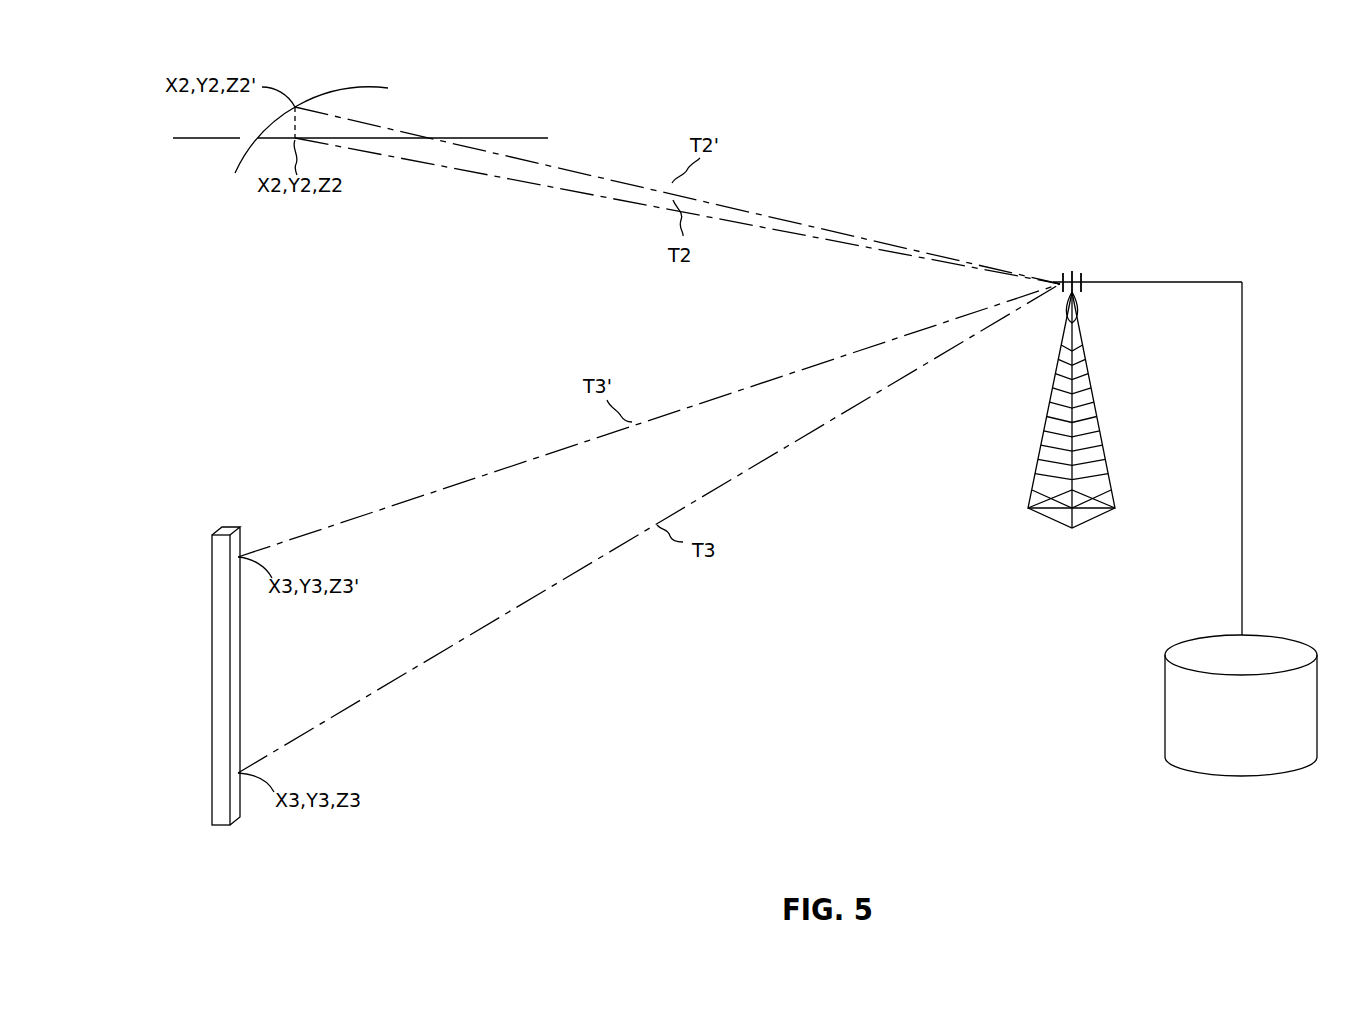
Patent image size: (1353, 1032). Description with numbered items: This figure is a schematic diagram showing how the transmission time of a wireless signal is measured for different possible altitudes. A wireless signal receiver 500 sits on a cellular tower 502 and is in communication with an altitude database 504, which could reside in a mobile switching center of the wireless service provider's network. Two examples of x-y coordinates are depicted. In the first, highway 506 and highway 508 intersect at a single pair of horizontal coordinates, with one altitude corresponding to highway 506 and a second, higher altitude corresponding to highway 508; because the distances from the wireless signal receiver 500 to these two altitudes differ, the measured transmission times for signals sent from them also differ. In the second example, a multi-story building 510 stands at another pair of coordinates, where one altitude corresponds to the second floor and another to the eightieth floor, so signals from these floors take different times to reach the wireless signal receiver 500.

The wireless signal receiver 500 is at (1077, 268).
The cellular tower 502 is at (1035, 463).
The altitude database 504 is at (1207, 773).
The highway 506 is at (208, 140).
The highway 508 is at (363, 88).
The multi-story building 510 is at (212, 810).